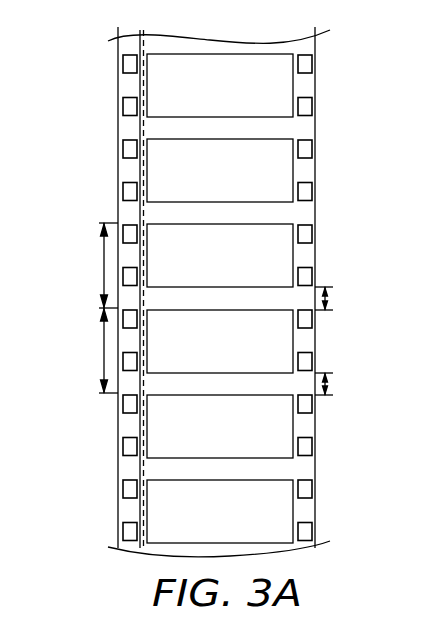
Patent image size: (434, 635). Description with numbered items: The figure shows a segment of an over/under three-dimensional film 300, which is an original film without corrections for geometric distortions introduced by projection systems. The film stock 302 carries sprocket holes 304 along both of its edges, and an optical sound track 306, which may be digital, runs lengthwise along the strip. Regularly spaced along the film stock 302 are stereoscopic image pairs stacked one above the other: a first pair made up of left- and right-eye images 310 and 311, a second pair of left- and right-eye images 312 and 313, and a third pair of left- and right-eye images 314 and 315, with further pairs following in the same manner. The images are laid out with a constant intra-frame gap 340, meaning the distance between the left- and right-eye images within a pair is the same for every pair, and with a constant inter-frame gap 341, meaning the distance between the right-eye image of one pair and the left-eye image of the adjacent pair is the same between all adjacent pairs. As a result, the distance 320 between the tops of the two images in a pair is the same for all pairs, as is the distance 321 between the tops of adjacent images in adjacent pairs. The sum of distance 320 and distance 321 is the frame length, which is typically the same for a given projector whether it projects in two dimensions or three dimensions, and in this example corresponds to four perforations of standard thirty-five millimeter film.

The over/under 3D film 300 is at (350, 545).
The film stock 302 is at (118, 122).
The sprocket holes 304 is at (124, 439).
The optical sound track 306 is at (143, 469).
The left-eye image of first stereoscopic pair 310 is at (291, 90).
The right-eye image of first stereoscopic pair 311 is at (291, 173).
The left-eye image of second stereoscopic pair 312 is at (291, 254).
The right-eye image of second stereoscopic pair 313 is at (291, 348).
The left-eye image of third stereoscopic pair 314 is at (291, 431).
The right-eye image of third stereoscopic pair 315 is at (291, 513).
The distance between tops of images in a pair 320 is at (102, 262).
The distance between tops of adjacent images in adjacent pairs 321 is at (102, 346).
The intra-frame gap 340 is at (327, 300).
The inter-frame gap 341 is at (327, 385).